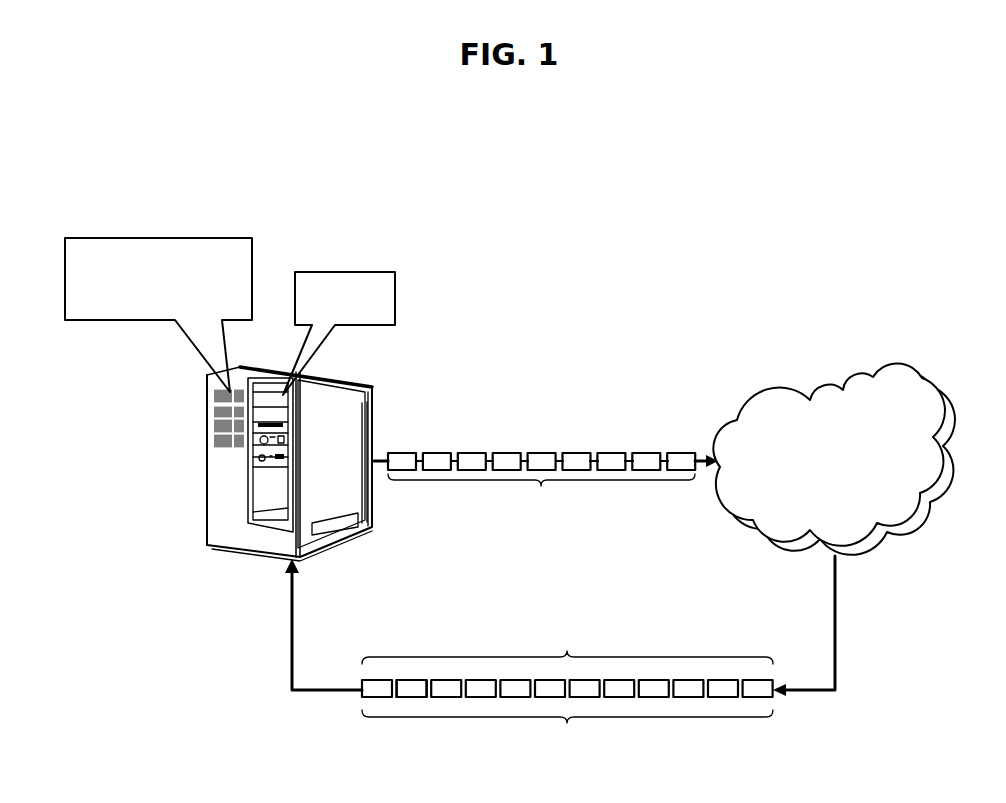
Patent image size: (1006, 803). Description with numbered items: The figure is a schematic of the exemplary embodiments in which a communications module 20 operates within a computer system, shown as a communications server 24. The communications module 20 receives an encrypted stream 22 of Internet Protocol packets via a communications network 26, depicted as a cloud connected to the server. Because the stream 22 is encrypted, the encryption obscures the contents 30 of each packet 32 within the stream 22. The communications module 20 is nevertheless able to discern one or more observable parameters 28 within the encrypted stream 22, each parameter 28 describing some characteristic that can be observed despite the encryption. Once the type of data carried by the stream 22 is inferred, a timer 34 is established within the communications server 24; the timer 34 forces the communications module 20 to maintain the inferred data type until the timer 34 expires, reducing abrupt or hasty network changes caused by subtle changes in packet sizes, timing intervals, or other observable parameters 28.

The communications module 20 is at (103, 236).
The encrypted stream of packets 22 is at (567, 602).
The communications server 24 is at (206, 447).
The communications network 26 is at (769, 376).
The observable parameters 28 is at (567, 645).
The contents 30 is at (407, 688).
The packet 32 is at (413, 688).
The timer 34 is at (378, 271).